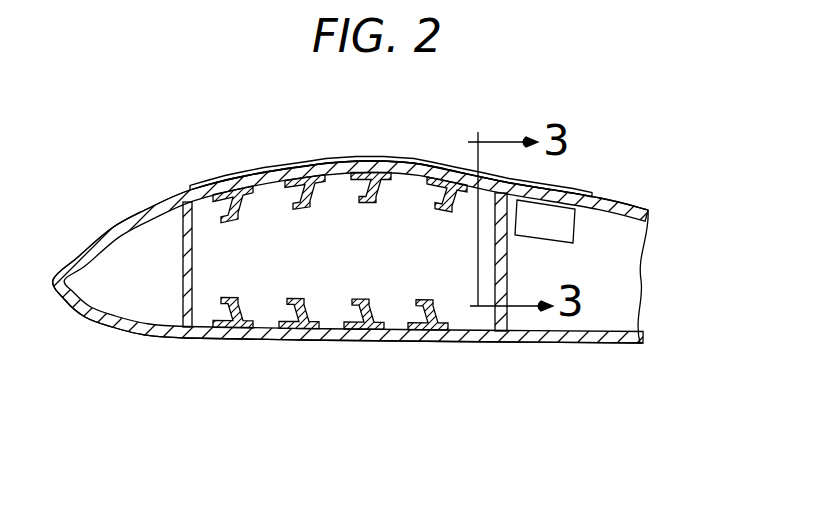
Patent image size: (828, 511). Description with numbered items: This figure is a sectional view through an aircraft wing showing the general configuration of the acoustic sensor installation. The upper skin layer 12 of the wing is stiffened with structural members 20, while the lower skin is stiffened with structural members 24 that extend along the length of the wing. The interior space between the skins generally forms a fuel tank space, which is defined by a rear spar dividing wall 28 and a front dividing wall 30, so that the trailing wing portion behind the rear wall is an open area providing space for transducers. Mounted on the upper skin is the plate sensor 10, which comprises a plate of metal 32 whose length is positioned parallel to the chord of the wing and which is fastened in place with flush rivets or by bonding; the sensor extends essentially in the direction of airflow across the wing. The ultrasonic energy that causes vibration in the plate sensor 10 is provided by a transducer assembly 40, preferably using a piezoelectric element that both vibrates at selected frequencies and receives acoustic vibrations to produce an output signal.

The plate sensor 10 is at (402, 161).
The upper skin layer 12 is at (620, 205).
The structural members 20 is at (233, 222).
The structural members 24 is at (283, 303).
The rear spar dividing wall 28 is at (507, 312).
The front dividing wall 30 is at (183, 282).
The plate of metal 32 is at (268, 167).
The transducer assembly 40 is at (593, 233).